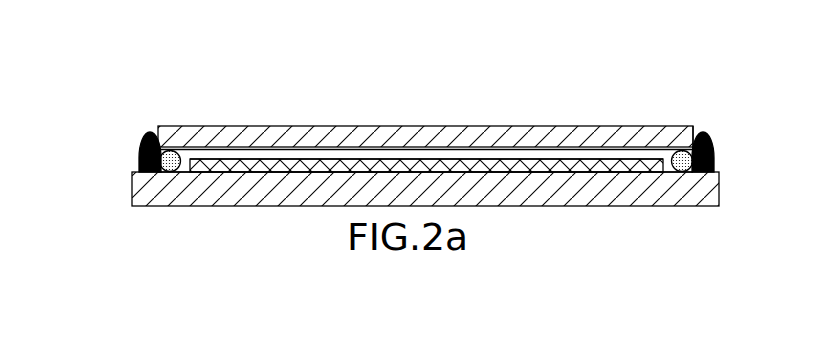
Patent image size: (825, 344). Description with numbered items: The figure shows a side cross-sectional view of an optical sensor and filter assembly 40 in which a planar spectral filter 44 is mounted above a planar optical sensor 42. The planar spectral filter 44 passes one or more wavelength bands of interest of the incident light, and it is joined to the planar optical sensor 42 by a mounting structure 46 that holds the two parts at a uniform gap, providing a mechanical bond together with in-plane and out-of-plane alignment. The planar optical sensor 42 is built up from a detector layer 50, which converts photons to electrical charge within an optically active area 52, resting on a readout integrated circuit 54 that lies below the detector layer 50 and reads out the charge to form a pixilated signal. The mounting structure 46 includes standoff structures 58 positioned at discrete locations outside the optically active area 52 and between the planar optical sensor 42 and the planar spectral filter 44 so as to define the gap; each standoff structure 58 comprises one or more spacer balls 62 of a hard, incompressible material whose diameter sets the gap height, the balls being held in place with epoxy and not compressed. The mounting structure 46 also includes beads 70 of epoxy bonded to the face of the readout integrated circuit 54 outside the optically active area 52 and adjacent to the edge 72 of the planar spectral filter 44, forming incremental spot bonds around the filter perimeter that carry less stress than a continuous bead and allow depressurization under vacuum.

The optical sensor and filter assembly 40 is at (288, 85).
The planar optical sensor 42 is at (105, 163).
The planar spectral filter 44 is at (590, 127).
The mounting structure 46 is at (730, 142).
The detector layer 50 is at (527, 172).
The optically active area 52 is at (463, 160).
The readout integrated circuit 54 is at (662, 192).
The standoff structure 58 is at (687, 182).
The spacer ball 62 is at (677, 151).
The bead 70 is at (139, 150).
The edge 72 is at (153, 136).